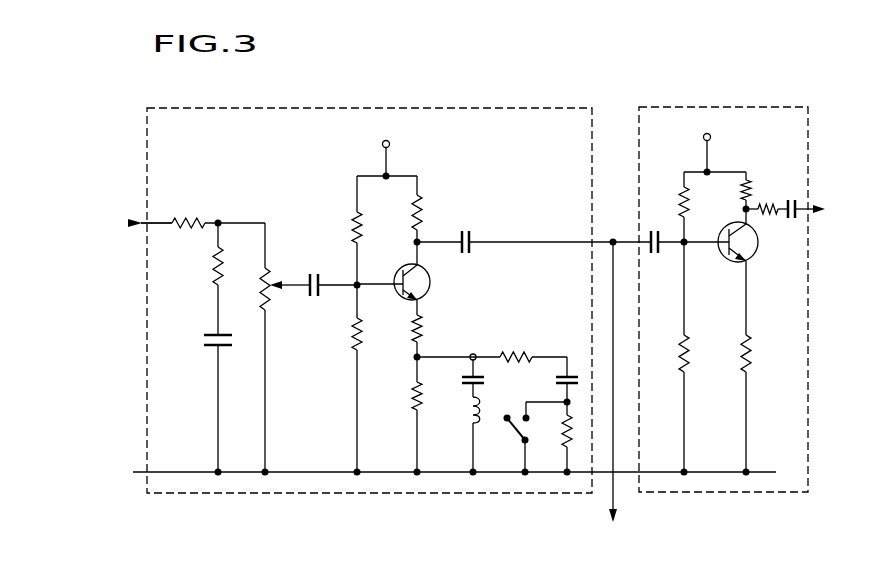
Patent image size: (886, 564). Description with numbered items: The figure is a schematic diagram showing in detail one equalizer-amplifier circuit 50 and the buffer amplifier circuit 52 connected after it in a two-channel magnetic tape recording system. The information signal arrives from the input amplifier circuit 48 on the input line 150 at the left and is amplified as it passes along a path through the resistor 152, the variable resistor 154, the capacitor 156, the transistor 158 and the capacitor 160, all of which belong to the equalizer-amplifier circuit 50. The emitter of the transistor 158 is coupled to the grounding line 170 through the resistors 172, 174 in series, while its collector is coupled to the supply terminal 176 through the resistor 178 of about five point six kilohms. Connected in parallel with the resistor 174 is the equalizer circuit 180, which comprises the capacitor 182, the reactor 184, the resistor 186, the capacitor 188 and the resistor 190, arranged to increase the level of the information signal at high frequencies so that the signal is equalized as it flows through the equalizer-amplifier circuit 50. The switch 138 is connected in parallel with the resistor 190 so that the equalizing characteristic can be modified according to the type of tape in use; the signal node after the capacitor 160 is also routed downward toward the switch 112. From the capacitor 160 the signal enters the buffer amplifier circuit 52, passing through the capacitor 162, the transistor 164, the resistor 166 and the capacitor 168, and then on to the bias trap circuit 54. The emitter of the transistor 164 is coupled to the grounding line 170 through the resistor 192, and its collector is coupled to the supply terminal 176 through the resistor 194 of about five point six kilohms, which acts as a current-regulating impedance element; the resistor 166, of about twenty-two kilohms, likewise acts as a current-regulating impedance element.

The input amplifier circuit 48 is at (100, 187).
The equalizer-amplifier circuit 50 is at (519, 107).
The buffer amplifier circuit 52 is at (660, 106).
The bias trap circuit 54 is at (847, 179).
The switch 112 is at (662, 397).
The switch 138 is at (515, 432).
The input line 150 is at (143, 226).
The resistor 152 is at (186, 218).
The variable resistor 154 is at (258, 280).
The capacitor 156 is at (320, 274).
The transistor 158 is at (431, 283).
The capacitor 160 is at (472, 237).
The capacitor 162 is at (655, 230).
The transistor 164 is at (728, 251).
The resistor 166 is at (767, 204).
The capacitor 168 is at (793, 218).
The grounding line 170 is at (303, 470).
The resistor 172 is at (425, 336).
The resistor 174 is at (413, 397).
The supply terminal 176 is at (390, 144).
The resistor 178 is at (421, 210).
The equalizer circuit 180 is at (567, 350).
The capacitor 182 is at (466, 375).
The reactor 184 is at (469, 415).
The resistor 186 is at (515, 350).
The capacitor 188 is at (557, 382).
The resistor 190 is at (564, 436).
The resistor 192 is at (750, 361).
The resistor 194 is at (743, 191).